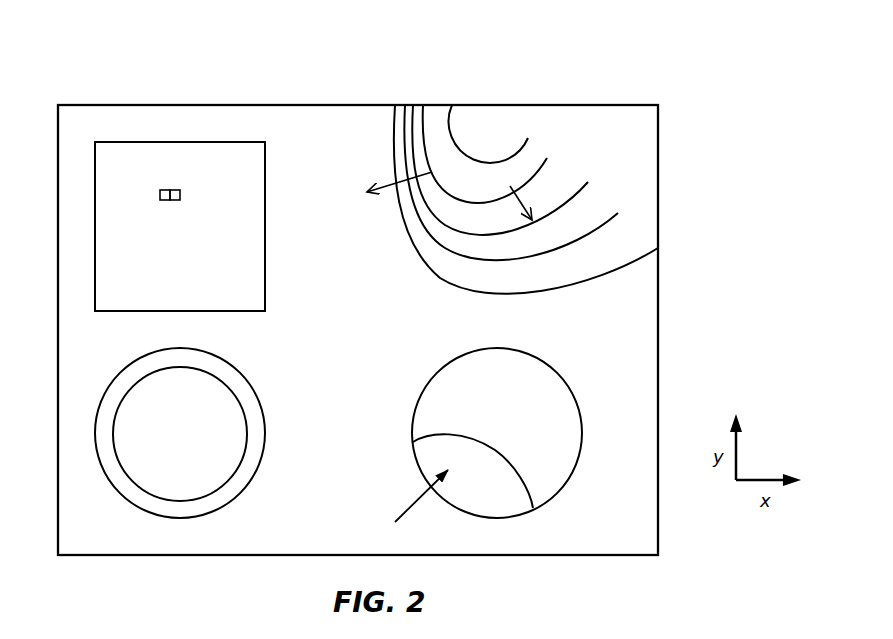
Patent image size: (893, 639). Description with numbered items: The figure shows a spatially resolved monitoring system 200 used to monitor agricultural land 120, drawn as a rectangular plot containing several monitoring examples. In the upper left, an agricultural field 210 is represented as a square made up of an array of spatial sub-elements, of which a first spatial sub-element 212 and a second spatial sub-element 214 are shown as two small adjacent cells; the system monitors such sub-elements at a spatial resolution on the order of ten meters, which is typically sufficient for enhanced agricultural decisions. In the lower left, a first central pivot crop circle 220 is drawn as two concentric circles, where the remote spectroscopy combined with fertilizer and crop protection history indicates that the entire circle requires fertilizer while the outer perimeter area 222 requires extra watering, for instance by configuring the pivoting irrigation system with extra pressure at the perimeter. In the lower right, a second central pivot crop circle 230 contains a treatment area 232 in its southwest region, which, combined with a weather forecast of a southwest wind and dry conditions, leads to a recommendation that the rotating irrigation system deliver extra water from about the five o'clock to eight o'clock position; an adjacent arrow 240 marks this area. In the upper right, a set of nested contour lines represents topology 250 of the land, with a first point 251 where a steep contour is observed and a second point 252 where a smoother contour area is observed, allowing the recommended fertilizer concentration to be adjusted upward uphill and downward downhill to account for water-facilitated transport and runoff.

The agricultural land 120 is at (95, 103).
The spatially resolved monitoring system 200 is at (411, 292).
The agricultural field 210 is at (228, 142).
The first spatial sub-element 212 is at (163, 189).
The second spatial sub-element 214 is at (177, 189).
The first central pivot crop circle 220 is at (224, 362).
The outer perimeter area 222 is at (252, 410).
The second central pivot crop circle 230 is at (531, 352).
The treatment area 232 is at (473, 471).
The movement direction arrow 240 is at (414, 506).
The topology 250 is at (508, 128).
The first point 251 is at (424, 144).
The second point 252 is at (527, 165).